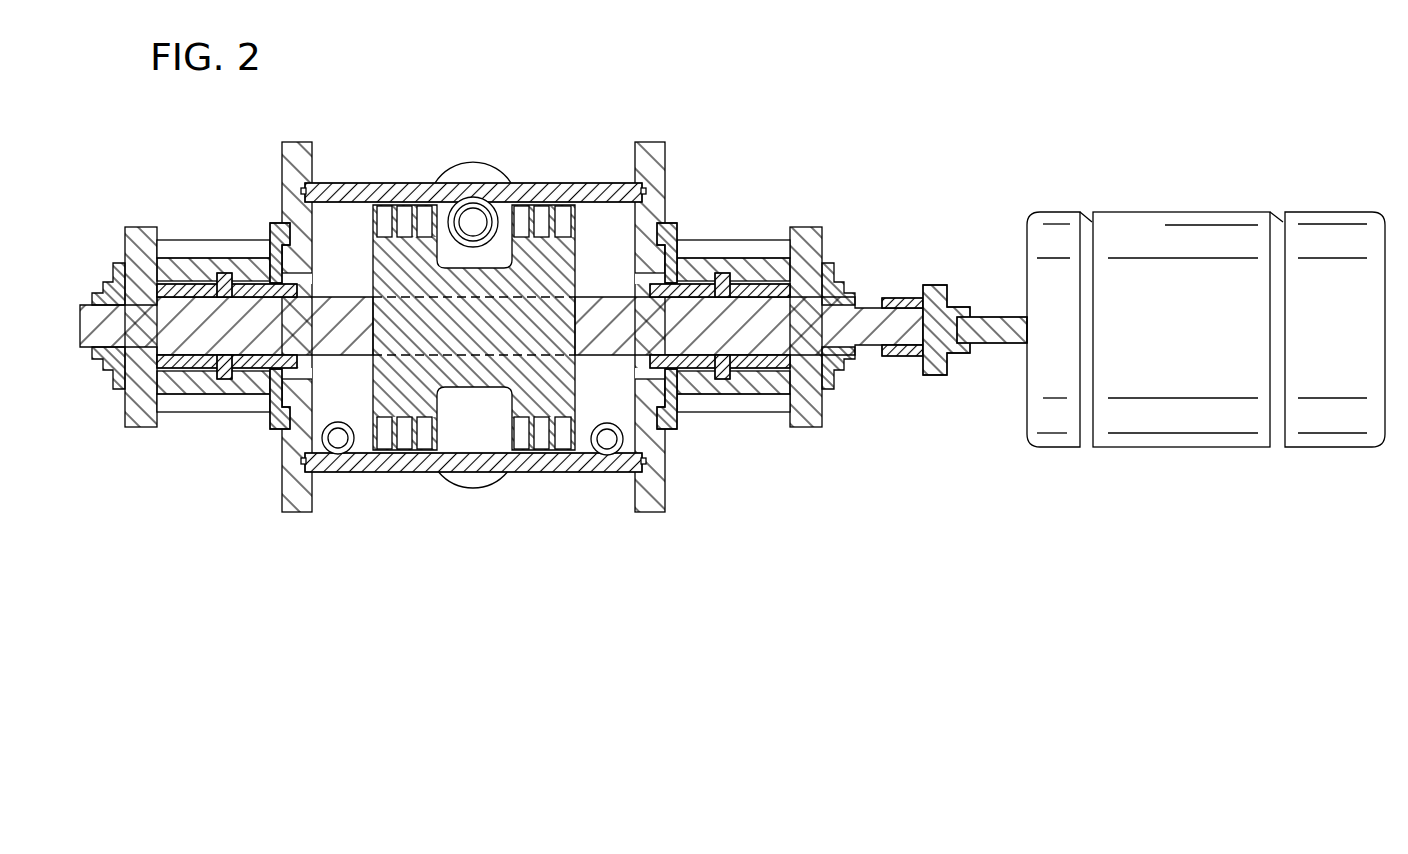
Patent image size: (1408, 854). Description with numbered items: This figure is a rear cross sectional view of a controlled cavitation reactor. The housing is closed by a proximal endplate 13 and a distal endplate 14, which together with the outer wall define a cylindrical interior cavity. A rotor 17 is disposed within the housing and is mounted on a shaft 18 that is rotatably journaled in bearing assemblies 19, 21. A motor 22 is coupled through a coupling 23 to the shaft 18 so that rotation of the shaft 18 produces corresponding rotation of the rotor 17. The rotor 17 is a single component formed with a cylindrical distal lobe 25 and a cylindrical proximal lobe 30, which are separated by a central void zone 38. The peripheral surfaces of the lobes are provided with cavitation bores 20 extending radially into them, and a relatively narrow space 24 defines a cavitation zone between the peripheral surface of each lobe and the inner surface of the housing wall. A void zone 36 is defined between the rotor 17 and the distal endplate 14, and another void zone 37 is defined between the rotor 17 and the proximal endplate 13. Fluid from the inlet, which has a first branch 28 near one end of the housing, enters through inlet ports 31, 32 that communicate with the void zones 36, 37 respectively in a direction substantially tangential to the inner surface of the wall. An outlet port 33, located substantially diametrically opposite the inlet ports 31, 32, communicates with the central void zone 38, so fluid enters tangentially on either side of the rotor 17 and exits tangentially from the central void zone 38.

The proximal endplate 13 is at (652, 158).
The distal endplate 14 is at (297, 165).
The rotor 17 is at (491, 331).
The shaft 18 is at (682, 341).
The bearing assembly 19 is at (729, 322).
The cavitation bores 20 is at (405, 217).
The bearing assembly 21 is at (188, 232).
The motor 22 is at (1183, 242).
The coupling 23 is at (935, 293).
The narrow space 24 is at (403, 440).
The distal lobe 25 is at (363, 387).
The first branch 28 is at (695, 475).
The proximal lobe 30 is at (585, 242).
The inlet port 31 is at (335, 437).
The inlet port 32 is at (608, 440).
The outlet port 33 is at (473, 218).
The void zone 36 is at (335, 230).
The void zone 37 is at (603, 390).
The central void zone 38 is at (473, 420).